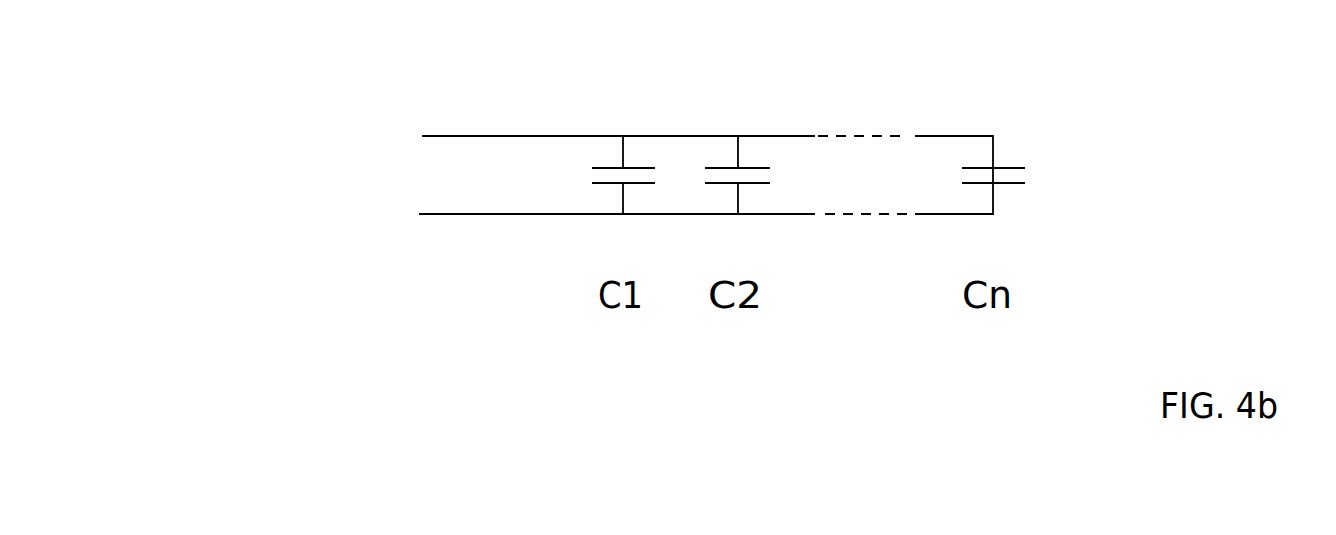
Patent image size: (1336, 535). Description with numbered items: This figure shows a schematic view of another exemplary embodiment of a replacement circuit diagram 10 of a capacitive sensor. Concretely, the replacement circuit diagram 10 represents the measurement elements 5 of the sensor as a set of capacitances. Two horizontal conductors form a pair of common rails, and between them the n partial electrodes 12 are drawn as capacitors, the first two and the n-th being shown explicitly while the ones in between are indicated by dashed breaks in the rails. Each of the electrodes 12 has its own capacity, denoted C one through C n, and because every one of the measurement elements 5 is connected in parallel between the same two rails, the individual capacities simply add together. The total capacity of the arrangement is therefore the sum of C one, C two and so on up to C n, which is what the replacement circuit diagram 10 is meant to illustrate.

The replacement circuit diagram 10 is at (396, 178).
The measurement elements 5 is at (783, 115).
The electrodes 12 is at (617, 119).